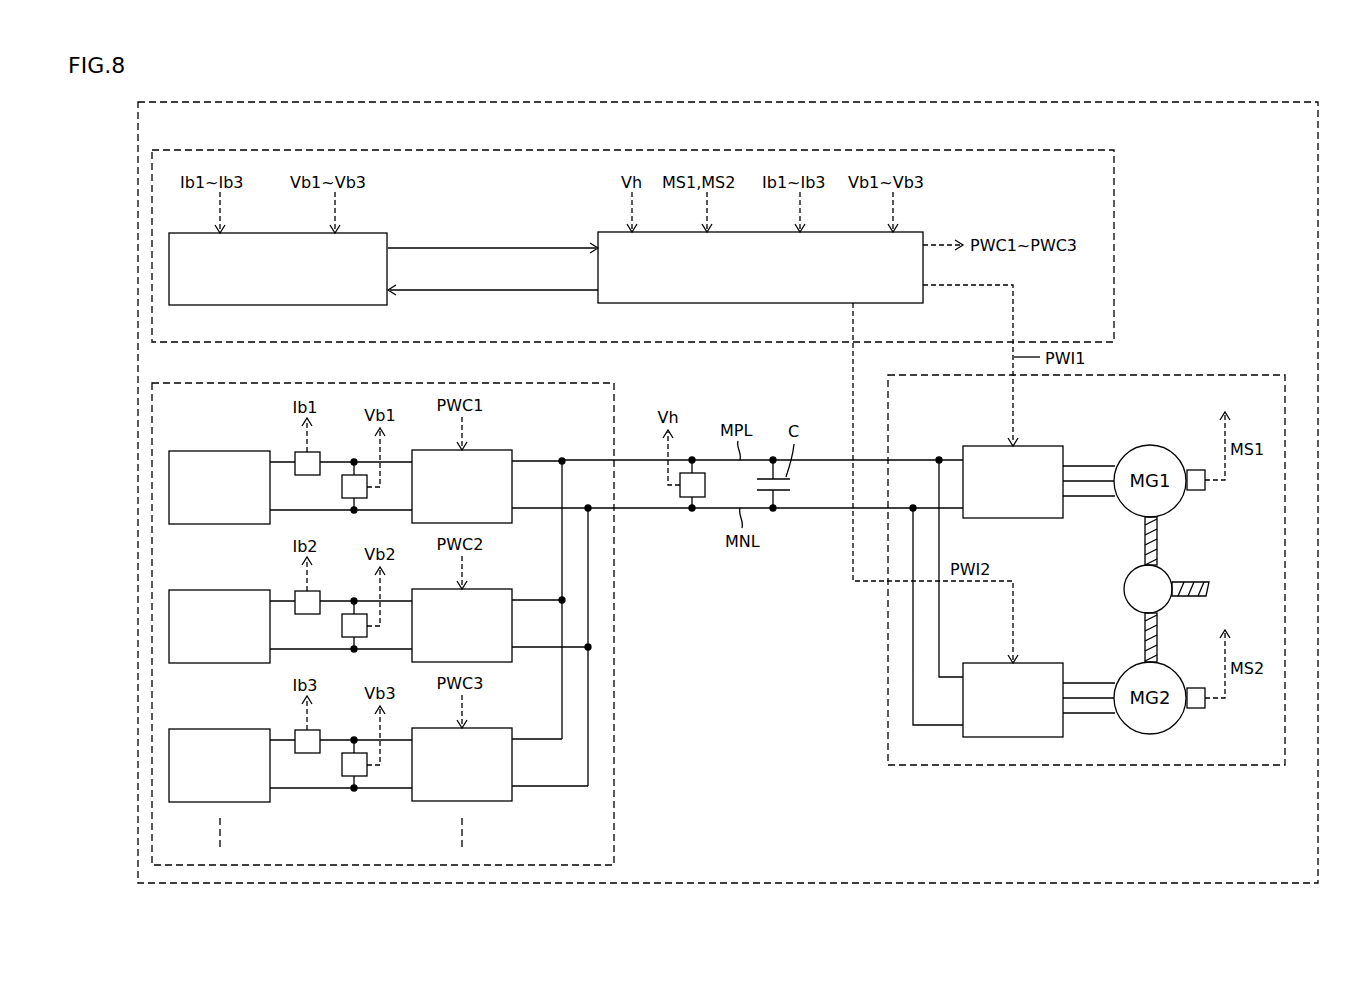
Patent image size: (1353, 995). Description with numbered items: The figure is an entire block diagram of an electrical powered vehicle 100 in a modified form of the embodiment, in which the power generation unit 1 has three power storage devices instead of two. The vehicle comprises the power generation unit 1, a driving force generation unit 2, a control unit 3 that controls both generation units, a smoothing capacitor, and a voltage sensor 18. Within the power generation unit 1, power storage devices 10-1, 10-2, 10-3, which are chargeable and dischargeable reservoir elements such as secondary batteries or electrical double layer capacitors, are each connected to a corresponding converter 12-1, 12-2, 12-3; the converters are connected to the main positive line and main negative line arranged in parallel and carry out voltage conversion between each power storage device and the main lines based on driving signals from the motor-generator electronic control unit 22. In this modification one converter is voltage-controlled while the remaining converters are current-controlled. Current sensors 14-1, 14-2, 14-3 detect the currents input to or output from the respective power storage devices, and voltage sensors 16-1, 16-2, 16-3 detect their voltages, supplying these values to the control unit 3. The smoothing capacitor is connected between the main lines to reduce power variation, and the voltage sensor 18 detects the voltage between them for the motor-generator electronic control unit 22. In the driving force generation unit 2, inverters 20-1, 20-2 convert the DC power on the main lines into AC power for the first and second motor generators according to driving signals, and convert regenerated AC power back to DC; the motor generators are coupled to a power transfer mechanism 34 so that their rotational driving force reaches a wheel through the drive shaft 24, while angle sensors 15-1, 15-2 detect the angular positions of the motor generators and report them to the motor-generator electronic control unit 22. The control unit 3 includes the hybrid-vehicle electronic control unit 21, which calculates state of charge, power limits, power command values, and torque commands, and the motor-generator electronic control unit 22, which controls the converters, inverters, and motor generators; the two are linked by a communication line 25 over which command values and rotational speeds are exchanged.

The electrical powered vehicle 100 is at (1165, 103).
The power generation unit 1 is at (622, 818).
The driving force generation unit 2 is at (1218, 375).
The control unit 3 is at (1003, 150).
The power storage device 10-1 is at (217, 451).
The power storage device 10-2 is at (217, 590).
The power storage device 10-3 is at (217, 729).
The converter 12-1 is at (483, 450).
The converter 12-2 is at (483, 589).
The converter 12-3 is at (483, 728).
The current sensor 14-1 is at (308, 475).
The current sensor 14-2 is at (308, 614).
The current sensor 14-3 is at (308, 753).
The voltage sensor 16-1 is at (352, 475).
The voltage sensor 16-2 is at (352, 614).
The voltage sensor 16-3 is at (352, 753).
The voltage sensor 18 is at (706, 490).
The inverter 20-1 is at (1035, 446).
The inverter 20-2 is at (1035, 663).
The angle sensor 15-1 is at (1200, 490).
The angle sensor 15-2 is at (1200, 708).
The HV-ECU 21 is at (343, 305).
The MG-ECU 22 is at (878, 303).
The communication line 25 is at (560, 238).
The drive shaft 24 is at (1180, 597).
The power transfer mechanism 34 is at (1168, 569).